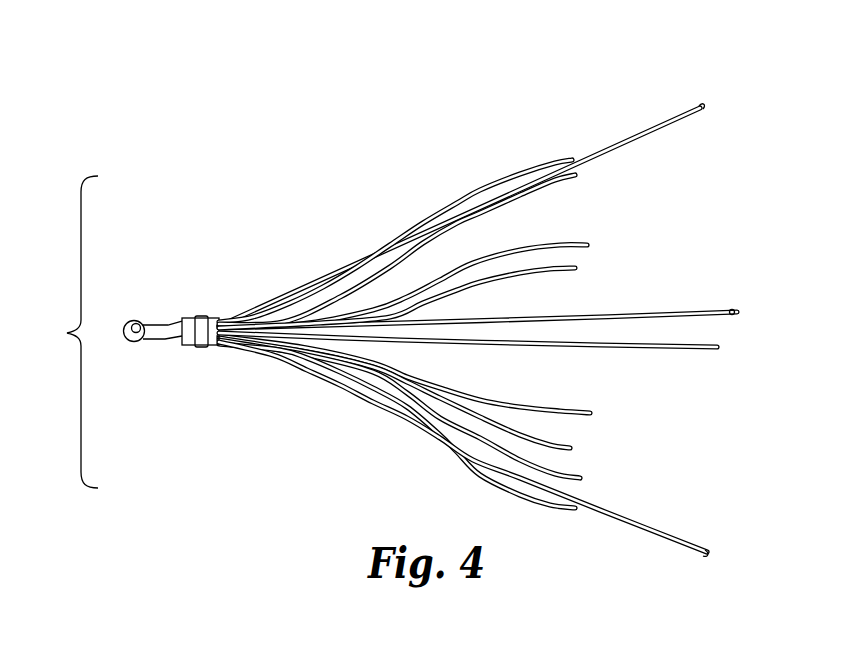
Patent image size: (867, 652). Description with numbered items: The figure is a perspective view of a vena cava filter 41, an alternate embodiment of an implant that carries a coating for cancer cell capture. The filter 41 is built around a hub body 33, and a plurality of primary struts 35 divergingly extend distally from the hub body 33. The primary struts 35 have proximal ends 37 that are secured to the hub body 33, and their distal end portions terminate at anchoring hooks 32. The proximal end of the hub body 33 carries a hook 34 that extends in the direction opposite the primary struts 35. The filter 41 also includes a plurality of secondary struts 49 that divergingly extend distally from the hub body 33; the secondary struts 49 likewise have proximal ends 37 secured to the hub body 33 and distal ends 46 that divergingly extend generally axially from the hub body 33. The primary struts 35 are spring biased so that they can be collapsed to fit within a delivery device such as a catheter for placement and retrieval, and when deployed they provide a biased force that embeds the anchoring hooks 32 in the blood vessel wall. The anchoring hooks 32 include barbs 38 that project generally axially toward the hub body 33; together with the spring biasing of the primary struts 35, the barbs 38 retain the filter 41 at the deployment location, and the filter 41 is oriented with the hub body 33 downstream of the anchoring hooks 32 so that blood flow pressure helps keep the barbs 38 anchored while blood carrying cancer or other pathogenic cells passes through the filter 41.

The anchoring hooks 32 is at (690, 352).
The hub body 33 is at (193, 316).
The hook 34 is at (126, 319).
The primary struts 35 is at (633, 147).
The proximal ends 37 is at (226, 318).
The barbs 38 is at (702, 557).
The vena cava filter 41 is at (67, 333).
The distal ends 46 is at (572, 238).
The secondary struts 49 is at (484, 258).